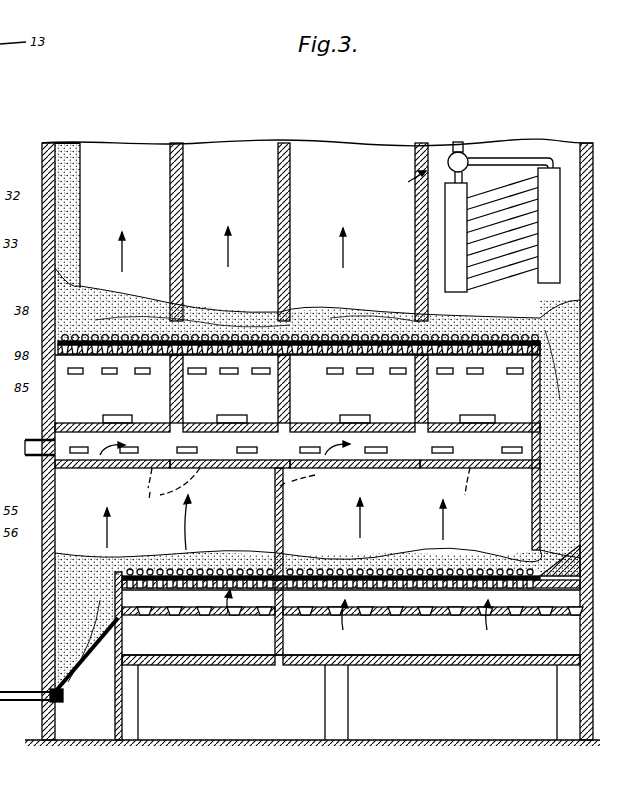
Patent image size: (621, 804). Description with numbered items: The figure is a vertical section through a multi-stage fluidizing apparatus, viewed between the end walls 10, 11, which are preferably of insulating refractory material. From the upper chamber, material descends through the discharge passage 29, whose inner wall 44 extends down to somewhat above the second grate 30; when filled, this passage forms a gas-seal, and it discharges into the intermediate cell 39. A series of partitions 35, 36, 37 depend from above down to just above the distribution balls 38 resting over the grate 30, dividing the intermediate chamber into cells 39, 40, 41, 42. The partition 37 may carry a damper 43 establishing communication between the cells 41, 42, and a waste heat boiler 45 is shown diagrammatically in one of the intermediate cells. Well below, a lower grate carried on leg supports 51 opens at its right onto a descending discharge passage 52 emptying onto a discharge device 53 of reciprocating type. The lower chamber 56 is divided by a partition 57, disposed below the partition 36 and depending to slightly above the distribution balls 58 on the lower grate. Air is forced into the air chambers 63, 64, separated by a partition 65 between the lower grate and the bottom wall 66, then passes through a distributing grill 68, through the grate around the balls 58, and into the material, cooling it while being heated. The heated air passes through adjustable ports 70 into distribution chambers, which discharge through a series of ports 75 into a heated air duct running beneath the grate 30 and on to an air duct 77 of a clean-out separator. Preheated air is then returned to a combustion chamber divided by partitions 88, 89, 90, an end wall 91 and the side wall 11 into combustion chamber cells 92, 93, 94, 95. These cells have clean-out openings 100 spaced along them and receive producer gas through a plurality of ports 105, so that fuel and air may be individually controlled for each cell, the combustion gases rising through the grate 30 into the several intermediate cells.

The end wall 10 is at (587, 143).
The end wall 11 is at (52, 143).
The discharge passage 29 is at (66, 143).
The second grate 30 is at (312, 318).
The partition 35 is at (178, 143).
The partition 36 is at (285, 143).
The partition 37 is at (424, 143).
The distribution balls 38 is at (135, 336).
The intermediate cell 39 is at (138, 158).
The intermediate cell 40 is at (238, 162).
The intermediate cell 41 is at (375, 160).
The intermediate cell 42 is at (507, 193).
The damper 43 is at (405, 182).
The inner wall 44 is at (82, 163).
The waste heat boiler 45 is at (550, 168).
The leg supports 51 is at (138, 697).
The descending discharge passage 52 is at (57, 617).
The discharge device 53 is at (28, 700).
The lower chamber 56 is at (112, 560).
The partition 57 is at (275, 521).
The distribution balls 58 is at (172, 570).
The air chamber 63 is at (467, 648).
The air chamber 64 is at (220, 646).
The partition 65 is at (292, 648).
The bottom wall 66 is at (292, 665).
The distributing grill 68 is at (443, 615).
The ports 70 is at (307, 490).
The ports 75 is at (78, 447).
The air duct 77 is at (26, 462).
The partition 88 is at (289, 400).
The partition 89 is at (292, 396).
The partition 90 is at (430, 395).
The end wall 91 is at (532, 508).
The combustion chamber cell 92 is at (152, 423).
The combustion chamber cell 93 is at (272, 423).
The combustion chamber cell 94 is at (402, 423).
The combustion chamber cell 95 is at (486, 423).
The clean-out openings 100 is at (118, 415).
The ports 105 is at (140, 376).